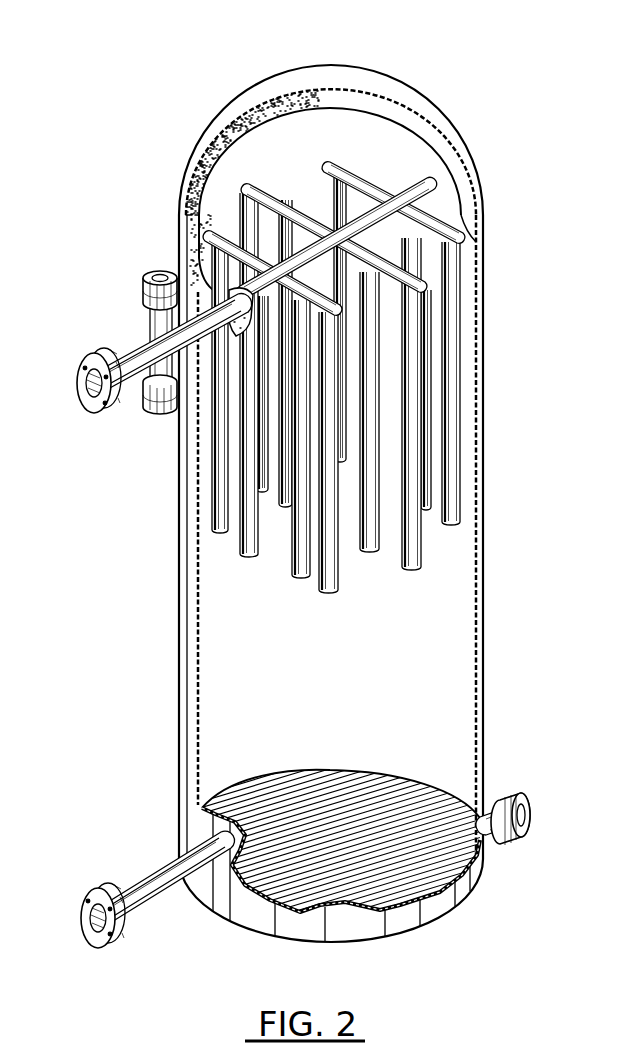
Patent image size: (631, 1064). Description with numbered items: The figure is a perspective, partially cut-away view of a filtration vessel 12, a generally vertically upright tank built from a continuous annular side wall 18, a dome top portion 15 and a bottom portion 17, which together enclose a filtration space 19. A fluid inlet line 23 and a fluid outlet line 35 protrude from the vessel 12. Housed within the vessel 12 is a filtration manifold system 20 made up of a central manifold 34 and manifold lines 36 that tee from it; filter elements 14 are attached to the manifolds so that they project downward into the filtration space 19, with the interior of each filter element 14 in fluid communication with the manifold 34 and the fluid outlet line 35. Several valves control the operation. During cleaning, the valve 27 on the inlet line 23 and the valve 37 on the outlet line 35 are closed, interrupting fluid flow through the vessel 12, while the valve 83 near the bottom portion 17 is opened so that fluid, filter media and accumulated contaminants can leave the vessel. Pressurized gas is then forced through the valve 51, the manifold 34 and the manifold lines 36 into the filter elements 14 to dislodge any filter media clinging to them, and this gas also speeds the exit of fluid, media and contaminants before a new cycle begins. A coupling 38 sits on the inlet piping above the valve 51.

The vessel 12 is at (490, 290).
The filter elements 14 is at (413, 572).
The dome top portion 15 is at (411, 86).
The bottom portion 17 is at (393, 869).
The continuous annular side wall 18 is at (487, 487).
The filtration space 19 is at (274, 652).
The filtration manifold system 20 is at (434, 178).
The fluid inlet line 23 is at (165, 857).
The valve 27 is at (80, 905).
The central manifold 34 is at (385, 210).
The fluid outlet line 35 is at (146, 318).
The manifold lines 36 is at (280, 196).
The valve 37 is at (94, 352).
The upper coupling 38 is at (158, 264).
The valve 51 is at (160, 408).
The valve 83 is at (531, 813).